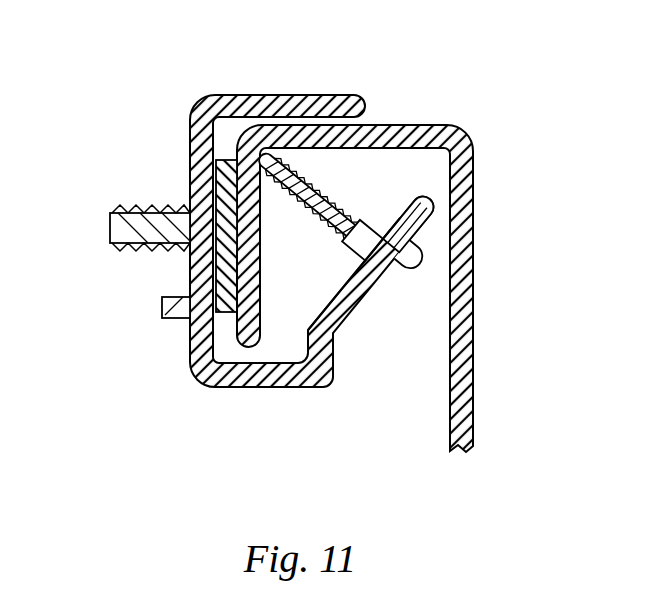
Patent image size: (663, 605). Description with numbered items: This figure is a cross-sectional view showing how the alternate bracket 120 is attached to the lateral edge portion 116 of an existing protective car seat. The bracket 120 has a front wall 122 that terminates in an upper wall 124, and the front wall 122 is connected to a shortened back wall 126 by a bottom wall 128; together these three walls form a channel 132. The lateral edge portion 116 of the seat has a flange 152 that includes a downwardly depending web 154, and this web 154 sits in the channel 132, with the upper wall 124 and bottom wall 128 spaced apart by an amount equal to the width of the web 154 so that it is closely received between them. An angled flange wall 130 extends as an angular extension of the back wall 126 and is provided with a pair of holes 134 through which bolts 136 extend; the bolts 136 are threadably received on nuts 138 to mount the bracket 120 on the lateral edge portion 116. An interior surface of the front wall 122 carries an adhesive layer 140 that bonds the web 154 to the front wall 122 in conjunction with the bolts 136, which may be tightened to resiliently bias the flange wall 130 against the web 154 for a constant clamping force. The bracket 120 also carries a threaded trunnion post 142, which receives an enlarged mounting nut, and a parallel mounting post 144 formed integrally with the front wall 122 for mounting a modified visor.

The lateral edge portion 116 is at (476, 195).
The bracket 120 is at (222, 77).
The front wall 122 is at (192, 140).
The upper wall 124 is at (250, 95).
The back wall 126 is at (318, 355).
The bottom wall 128 is at (232, 380).
The flange wall 130 is at (407, 205).
The channel 132 is at (278, 357).
The holes 134 is at (340, 292).
The bolts 136 is at (383, 268).
The nuts 138 is at (380, 217).
The adhesive layer 140 is at (225, 265).
The trunnion post 142 is at (145, 210).
The mounting post 144 is at (165, 312).
The flange 152 is at (373, 122).
The web 154 is at (243, 345).